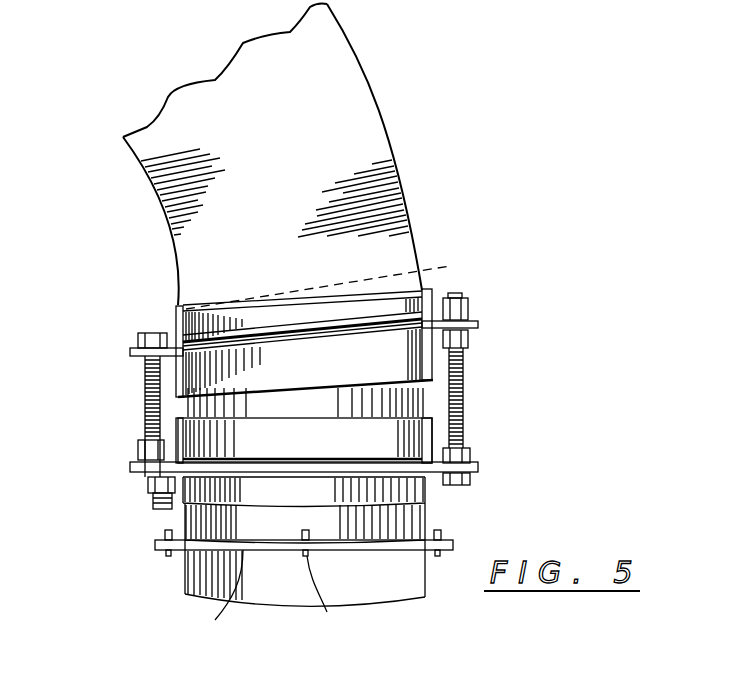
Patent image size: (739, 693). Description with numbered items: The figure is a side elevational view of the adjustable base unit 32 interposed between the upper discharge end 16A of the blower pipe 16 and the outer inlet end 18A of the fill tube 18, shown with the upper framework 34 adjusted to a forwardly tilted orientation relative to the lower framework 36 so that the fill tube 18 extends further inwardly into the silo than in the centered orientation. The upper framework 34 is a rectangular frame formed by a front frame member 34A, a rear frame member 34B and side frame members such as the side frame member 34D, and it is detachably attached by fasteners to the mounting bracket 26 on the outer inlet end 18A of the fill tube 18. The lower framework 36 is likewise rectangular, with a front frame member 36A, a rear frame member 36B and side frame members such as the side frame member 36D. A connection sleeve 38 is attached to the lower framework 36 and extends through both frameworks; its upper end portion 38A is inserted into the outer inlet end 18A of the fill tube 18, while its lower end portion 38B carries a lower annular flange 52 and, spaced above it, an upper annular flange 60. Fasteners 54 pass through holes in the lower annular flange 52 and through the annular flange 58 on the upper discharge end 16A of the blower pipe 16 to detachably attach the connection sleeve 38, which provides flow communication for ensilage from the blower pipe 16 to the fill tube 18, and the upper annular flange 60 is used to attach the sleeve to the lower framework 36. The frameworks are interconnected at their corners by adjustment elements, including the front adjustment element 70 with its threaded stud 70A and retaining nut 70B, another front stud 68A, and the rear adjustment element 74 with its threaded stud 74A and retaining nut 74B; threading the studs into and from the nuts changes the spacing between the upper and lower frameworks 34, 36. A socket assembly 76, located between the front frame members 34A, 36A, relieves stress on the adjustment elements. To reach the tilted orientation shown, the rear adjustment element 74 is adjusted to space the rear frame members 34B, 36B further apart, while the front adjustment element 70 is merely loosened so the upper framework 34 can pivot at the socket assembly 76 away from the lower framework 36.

The blower pipe 16 is at (196, 587).
The upper discharge end of the blower pipe 16A is at (282, 588).
The fill tube 18 is at (364, 45).
The outer inlet end of the fill tube 18A is at (405, 257).
The mounting bracket 26 is at (174, 318).
The adjustable base unit 32 is at (510, 344).
The upper framework 34 is at (346, 332).
The front frame member of the upper framework 34A is at (178, 365).
The rear frame member of the upper framework 34B is at (433, 366).
The side frame member of the upper framework 34D is at (370, 375).
The lower framework 36 is at (214, 461).
The front frame member of the lower framework 36A is at (177, 428).
The rear frame member of the lower framework 36B is at (435, 441).
The side frame member of the lower framework 36D is at (426, 484).
The connection sleeve 38 is at (402, 398).
The upper end portion of the connection sleeve 38A is at (349, 281).
The lower end portion of the connection sleeve 38B is at (423, 507).
The lower annular flange 52 is at (262, 543).
The fasteners 54 is at (168, 553).
The annular flange on the blower pipe 58 is at (215, 620).
The upper annular flange 60 is at (200, 477).
The threaded stud 68A is at (157, 504).
The adjustment element 70 is at (132, 388).
The threaded stud 70A is at (147, 403).
The retaining nut 70B is at (150, 450).
The adjustment element 74 is at (475, 412).
The threaded stud 74A is at (470, 388).
The retaining nut 74B is at (470, 313).
The socket assembly 76 is at (192, 380).